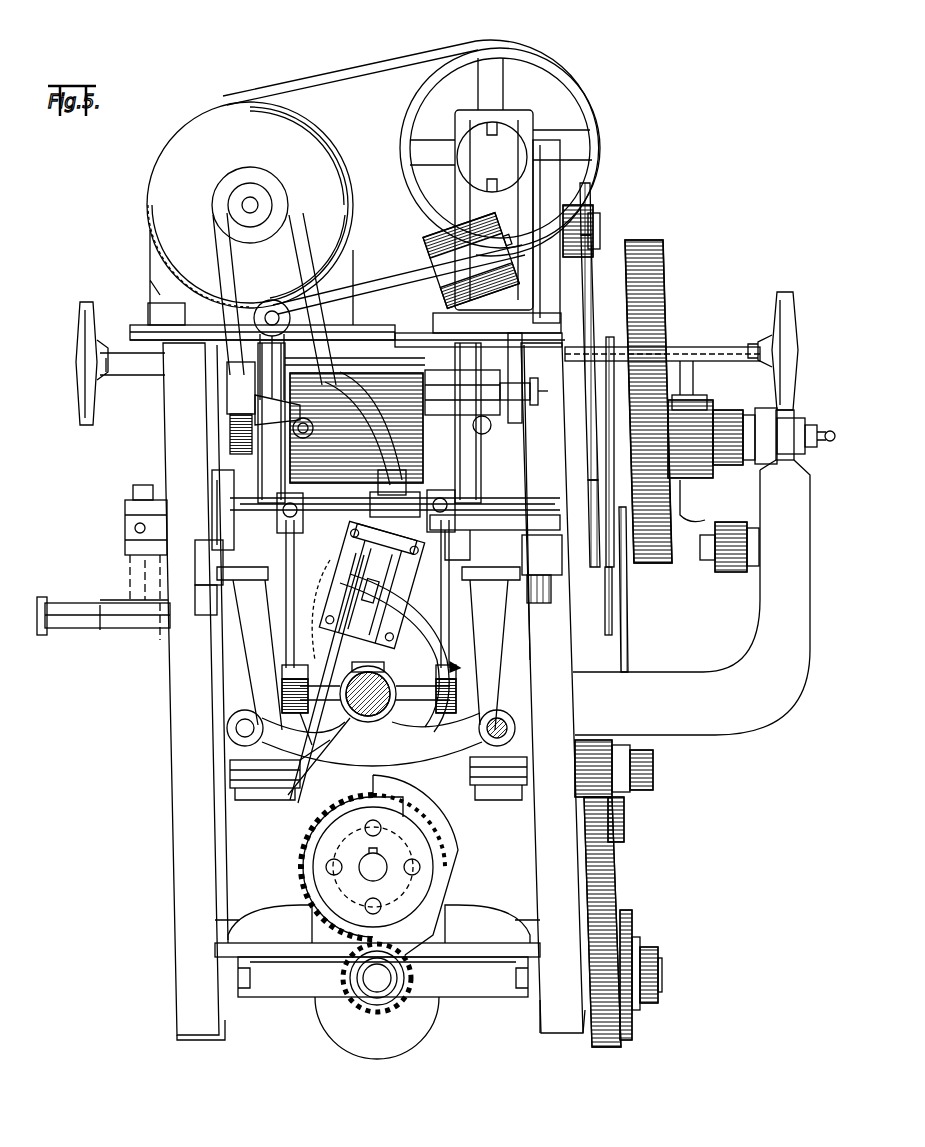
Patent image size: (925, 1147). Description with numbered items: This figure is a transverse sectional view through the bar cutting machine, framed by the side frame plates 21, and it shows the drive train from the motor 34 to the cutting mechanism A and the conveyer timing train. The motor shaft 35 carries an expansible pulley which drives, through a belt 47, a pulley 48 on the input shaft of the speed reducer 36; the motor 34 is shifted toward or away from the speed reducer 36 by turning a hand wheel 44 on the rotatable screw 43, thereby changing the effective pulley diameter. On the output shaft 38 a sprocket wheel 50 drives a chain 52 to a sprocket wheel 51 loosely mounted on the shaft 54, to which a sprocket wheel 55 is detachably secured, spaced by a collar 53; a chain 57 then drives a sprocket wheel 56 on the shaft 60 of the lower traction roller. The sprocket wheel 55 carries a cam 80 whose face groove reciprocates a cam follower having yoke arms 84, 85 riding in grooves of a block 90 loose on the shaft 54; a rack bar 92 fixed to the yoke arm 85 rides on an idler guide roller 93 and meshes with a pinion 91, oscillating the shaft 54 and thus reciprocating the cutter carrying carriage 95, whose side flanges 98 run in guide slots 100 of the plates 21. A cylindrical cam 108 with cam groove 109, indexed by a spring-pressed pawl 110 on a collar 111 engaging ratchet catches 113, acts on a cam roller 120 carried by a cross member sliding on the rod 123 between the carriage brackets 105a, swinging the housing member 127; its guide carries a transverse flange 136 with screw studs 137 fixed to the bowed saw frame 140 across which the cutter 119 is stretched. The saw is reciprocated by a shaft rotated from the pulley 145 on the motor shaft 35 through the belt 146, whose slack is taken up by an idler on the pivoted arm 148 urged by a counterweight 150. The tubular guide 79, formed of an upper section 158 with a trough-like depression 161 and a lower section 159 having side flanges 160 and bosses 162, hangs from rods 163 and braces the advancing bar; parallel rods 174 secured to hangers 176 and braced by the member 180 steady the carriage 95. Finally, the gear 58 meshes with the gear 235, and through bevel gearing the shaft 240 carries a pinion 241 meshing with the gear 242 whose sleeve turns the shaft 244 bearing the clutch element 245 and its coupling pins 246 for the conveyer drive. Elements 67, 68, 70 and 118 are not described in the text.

The side frame plates 21 is at (182, 820).
The motor 34 is at (230, 100).
The motor shaft 35 is at (256, 200).
The speed reducer 36 is at (522, 118).
The output shaft 38 is at (602, 226).
The rotatable screw 43 is at (720, 350).
The hand wheels 44 is at (795, 318).
The belt 47 is at (358, 85).
The pulley 48 is at (545, 78).
The sprocket wheel 50 is at (590, 196).
The sprocket wheel 51 is at (594, 568).
The chain 52 is at (590, 292).
The collar 53 is at (608, 596).
The shaft 54 is at (810, 430).
The sprocket wheel 55 is at (608, 362).
The sprocket wheel 56 is at (634, 826).
The chain 57 is at (630, 608).
The gear 58 is at (655, 768).
The shaft 60 is at (493, 790).
The bracket 67 is at (125, 527).
The bracket 68 is at (132, 572).
The rod 70 is at (40, 600).
The tubular guide 79 is at (386, 730).
The cam 80 is at (662, 255).
The yoke arm 84 is at (697, 398).
The yoke arm 85 is at (702, 555).
The block 90 is at (682, 427).
The pinion 91 is at (728, 420).
The rack bar 92 is at (766, 497).
The idler guide roller 93 is at (728, 574).
The cutter carrying carriage 95 is at (240, 525).
The side flanges 98 is at (196, 581).
The guide slots 100 is at (195, 560).
The carriage brackets 105a is at (242, 470).
The cylindrical cam 108 is at (440, 362).
The cam groove 109 is at (350, 385).
The spring-pressed pawl 110 is at (506, 395).
The collar 111 is at (485, 372).
The ratchet catches 113 is at (412, 442).
The bracket 118 is at (230, 395).
The cutter 119 is at (284, 672).
The cam roller 120 is at (376, 442).
The rod 123 is at (355, 508).
The member 127 is at (343, 632).
The transverse flange 136 is at (456, 527).
The screw studs 137 is at (352, 560).
The bowed saw frame 140 is at (295, 792).
The pulley 145 is at (235, 185).
The belt 146 is at (220, 245).
The pivoted arm 148 is at (265, 308).
The counterweight 150 is at (430, 240).
The upper section 158 is at (432, 646).
The lower section 159 is at (355, 762).
The side flanges 160 is at (458, 692).
The trough-like depression 161 is at (370, 660).
The bosses 162 is at (282, 688).
The rods 163 is at (286, 650).
The parallel rods 174 is at (228, 728).
The hangers 176 is at (262, 618).
The member 180 is at (448, 745).
The gear 235 is at (622, 1062).
The shaft 240 is at (392, 980).
The pinion 241 is at (376, 1040).
The gear 242 is at (302, 849).
The shaft 244 is at (358, 870).
The clutch element 245 is at (432, 850).
The coupling pins 246 is at (308, 876).
The cutting mechanism A is at (460, 666).